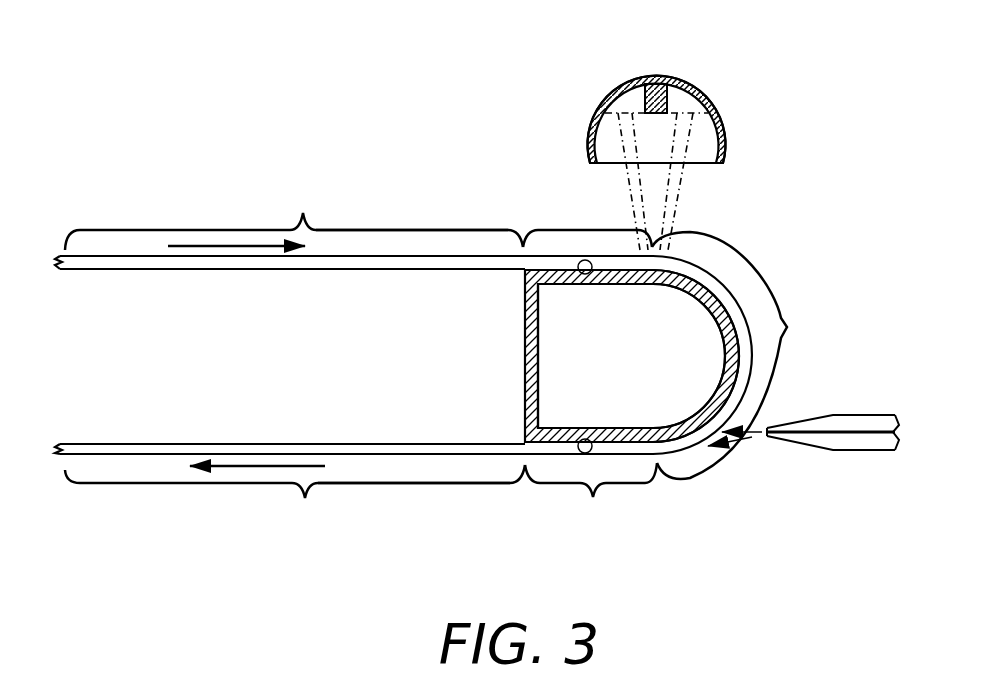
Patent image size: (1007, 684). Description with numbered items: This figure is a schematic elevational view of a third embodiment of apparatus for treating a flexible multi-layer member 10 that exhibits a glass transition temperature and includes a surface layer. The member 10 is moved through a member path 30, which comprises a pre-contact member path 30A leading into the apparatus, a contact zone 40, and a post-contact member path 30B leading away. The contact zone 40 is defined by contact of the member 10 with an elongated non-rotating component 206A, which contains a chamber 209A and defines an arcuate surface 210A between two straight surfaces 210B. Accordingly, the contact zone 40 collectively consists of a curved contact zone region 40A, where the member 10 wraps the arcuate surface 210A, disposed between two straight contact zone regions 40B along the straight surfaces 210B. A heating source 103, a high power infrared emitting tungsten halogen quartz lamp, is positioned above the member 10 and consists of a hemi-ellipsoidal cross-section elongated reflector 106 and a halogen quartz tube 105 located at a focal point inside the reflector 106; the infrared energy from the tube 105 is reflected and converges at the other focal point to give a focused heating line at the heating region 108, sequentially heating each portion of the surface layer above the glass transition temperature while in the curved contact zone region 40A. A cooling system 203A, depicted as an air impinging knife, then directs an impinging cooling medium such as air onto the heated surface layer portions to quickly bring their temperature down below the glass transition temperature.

The member 10 is at (104, 271).
The member path 30 is at (219, 210).
The pre-contact member path 30A is at (303, 213).
The post-contact member path 30B is at (305, 498).
The contact zone 40 is at (528, 215).
The curved contact zone region 40A is at (787, 327).
The straight contact zone regions 40B is at (640, 252).
The heating source 103 is at (596, 92).
The halogen quartz tube 105 is at (652, 84).
The elongated reflector 106 is at (712, 104).
The heating region 108 is at (632, 249).
The cooling system 203A is at (804, 465).
The elongated non-rotating component 206A is at (502, 320).
The chamber 209A is at (555, 353).
The arcuate surface 210A is at (700, 287).
The straight surfaces 210B is at (587, 274).